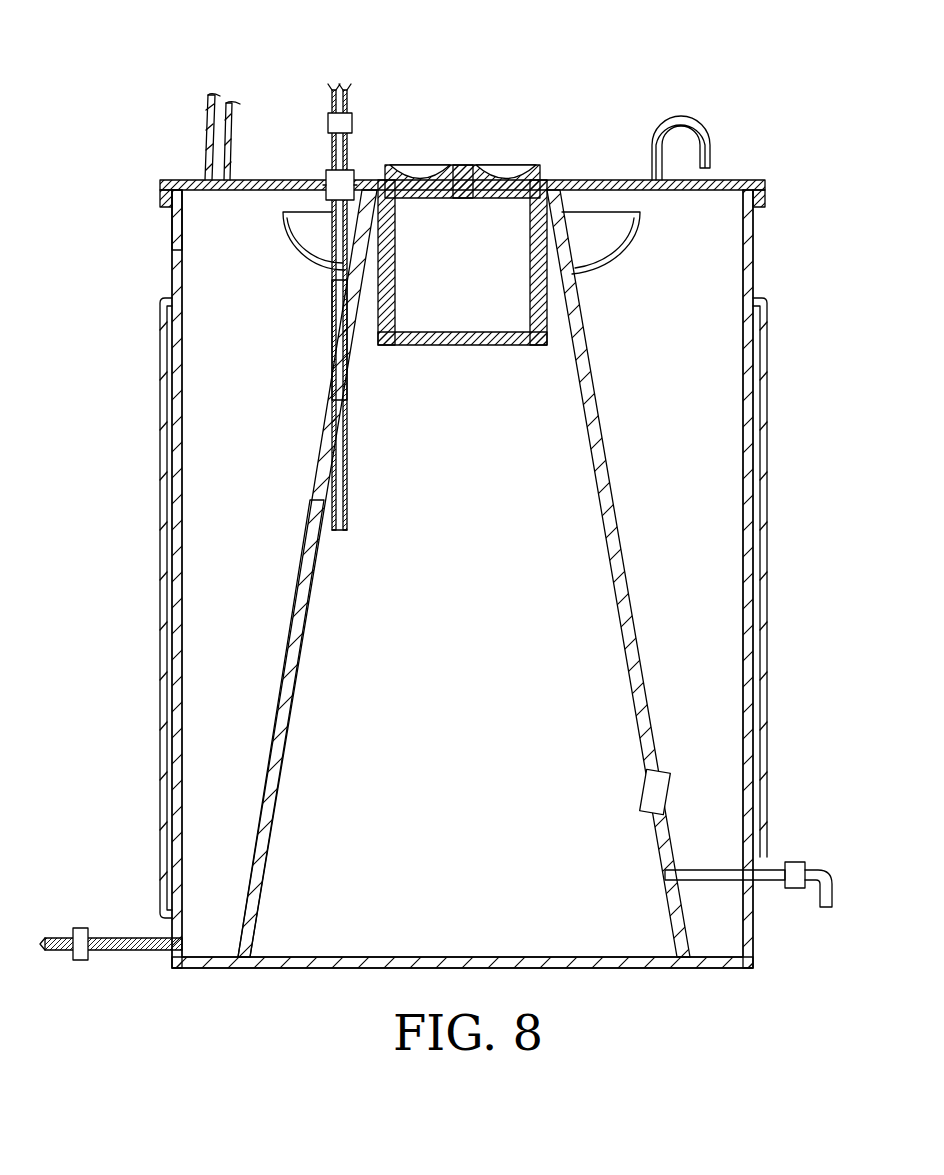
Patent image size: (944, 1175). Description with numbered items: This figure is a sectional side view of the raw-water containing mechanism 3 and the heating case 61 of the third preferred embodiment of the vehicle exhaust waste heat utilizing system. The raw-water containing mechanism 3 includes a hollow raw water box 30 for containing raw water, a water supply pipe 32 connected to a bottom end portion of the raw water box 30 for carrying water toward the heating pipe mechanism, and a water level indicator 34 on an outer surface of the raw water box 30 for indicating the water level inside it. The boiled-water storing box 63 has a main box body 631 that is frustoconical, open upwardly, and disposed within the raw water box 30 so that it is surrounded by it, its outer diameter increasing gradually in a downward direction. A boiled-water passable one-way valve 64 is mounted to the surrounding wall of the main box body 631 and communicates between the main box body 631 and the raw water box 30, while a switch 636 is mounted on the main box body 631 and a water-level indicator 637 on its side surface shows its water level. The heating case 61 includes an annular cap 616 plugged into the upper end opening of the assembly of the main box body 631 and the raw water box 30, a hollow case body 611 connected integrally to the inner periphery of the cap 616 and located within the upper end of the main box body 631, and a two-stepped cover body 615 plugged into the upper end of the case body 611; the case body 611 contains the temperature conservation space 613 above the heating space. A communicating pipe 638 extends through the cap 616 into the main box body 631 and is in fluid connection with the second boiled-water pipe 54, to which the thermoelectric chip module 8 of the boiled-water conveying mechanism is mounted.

The raw-water containing mechanism 3 is at (166, 275).
The raw water box 30 is at (178, 246).
The water supply pipe 32 is at (118, 936).
The water level indicator 34 is at (158, 455).
The heating case 61 is at (280, 176).
The boiled-water storing box 63 is at (284, 598).
The main box body 631 is at (283, 680).
The boiled-water passable one-way valve 64 is at (662, 790).
The switch 636 is at (796, 864).
The water-level indicator 637 is at (762, 640).
The communicating pipe 638 is at (330, 337).
The case body 611 is at (540, 232).
The temperature conservation space 613 is at (503, 213).
The cover body 615 is at (463, 170).
The annular cap 616 is at (257, 178).
The second boiled-water pipe 54 is at (340, 88).
The thermoelectric chip module 8 is at (352, 127).